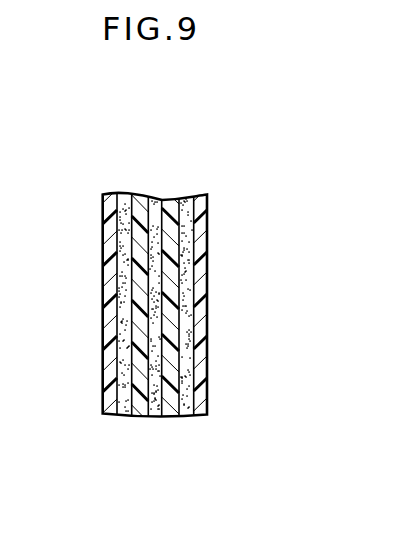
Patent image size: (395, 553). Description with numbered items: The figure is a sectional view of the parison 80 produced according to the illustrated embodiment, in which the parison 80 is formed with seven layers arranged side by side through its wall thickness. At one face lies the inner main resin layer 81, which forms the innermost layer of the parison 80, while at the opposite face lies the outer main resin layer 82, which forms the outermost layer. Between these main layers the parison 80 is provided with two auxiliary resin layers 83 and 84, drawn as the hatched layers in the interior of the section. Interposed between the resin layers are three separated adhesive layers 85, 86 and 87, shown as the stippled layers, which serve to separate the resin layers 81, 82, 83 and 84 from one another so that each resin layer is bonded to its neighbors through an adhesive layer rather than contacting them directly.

The parison 80 is at (205, 192).
The inner main resin layer 81 is at (108, 417).
The outer main resin layer 82 is at (202, 417).
The auxiliary resin layer 83 is at (140, 205).
The auxiliary resin layer 84 is at (168, 205).
The adhesive layer 85 is at (123, 417).
The adhesive layer 86 is at (155, 417).
The adhesive layer 87 is at (182, 417).